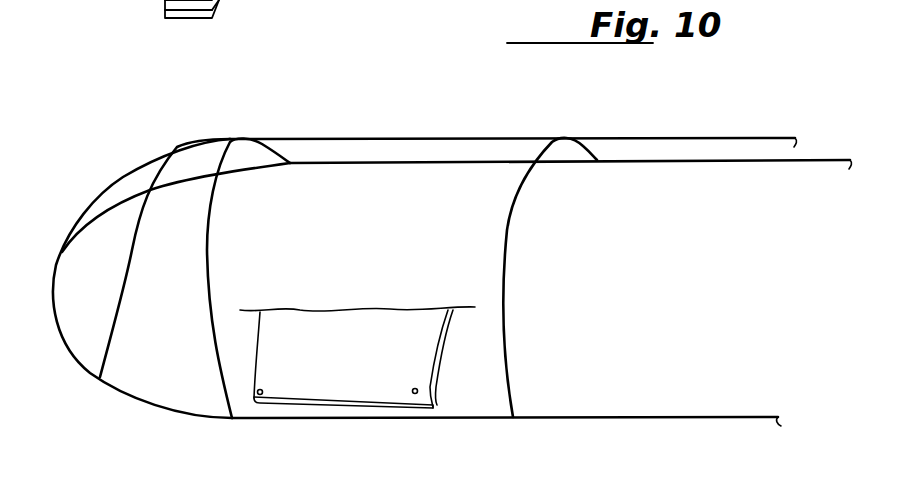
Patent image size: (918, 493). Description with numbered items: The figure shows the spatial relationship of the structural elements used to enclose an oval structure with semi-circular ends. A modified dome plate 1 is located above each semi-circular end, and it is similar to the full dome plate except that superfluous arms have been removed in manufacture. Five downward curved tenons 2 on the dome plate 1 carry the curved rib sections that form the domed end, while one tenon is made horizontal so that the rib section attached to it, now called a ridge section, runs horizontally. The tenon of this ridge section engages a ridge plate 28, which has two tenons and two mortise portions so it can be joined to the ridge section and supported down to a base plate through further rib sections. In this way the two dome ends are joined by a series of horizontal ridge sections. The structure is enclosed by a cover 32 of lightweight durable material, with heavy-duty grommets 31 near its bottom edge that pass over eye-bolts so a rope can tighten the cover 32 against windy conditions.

The modified dome plate 1 is at (235, 140).
The downward curved tenons 2 is at (127, 170).
The ridge plate 28 is at (557, 138).
The grommets 31 is at (418, 391).
The cover 32 is at (387, 320).